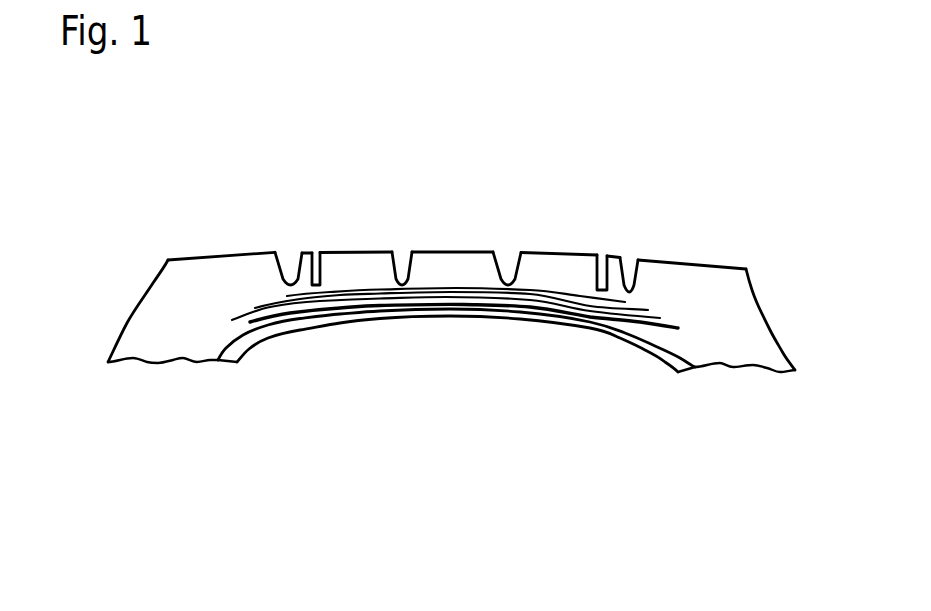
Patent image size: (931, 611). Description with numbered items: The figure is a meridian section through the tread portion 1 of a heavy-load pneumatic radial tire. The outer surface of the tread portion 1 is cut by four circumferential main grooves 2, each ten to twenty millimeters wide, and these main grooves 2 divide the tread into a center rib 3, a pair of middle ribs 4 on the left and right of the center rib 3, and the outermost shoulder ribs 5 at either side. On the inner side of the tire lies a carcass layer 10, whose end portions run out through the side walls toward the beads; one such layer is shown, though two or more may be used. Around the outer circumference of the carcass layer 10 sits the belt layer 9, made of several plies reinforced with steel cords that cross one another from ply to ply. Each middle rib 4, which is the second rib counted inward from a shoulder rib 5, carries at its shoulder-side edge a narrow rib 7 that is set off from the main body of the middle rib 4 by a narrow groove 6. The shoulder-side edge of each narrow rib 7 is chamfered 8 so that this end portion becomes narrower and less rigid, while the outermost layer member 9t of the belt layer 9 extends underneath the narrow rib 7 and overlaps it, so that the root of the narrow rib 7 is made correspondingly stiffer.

The tread portion 1 is at (205, 258).
The main grooves 2 is at (403, 268).
The center rib 3 is at (462, 266).
The middle ribs 4 is at (358, 260).
The shoulder ribs 5 is at (237, 266).
The narrow groove 6 is at (315, 254).
The narrow rib 7 is at (312, 253).
The chamfer 8 is at (303, 252).
The belt layer 9 is at (433, 288).
The outermost layer member of the belt layer 9t is at (488, 288).
The carcass layer 10 is at (685, 353).